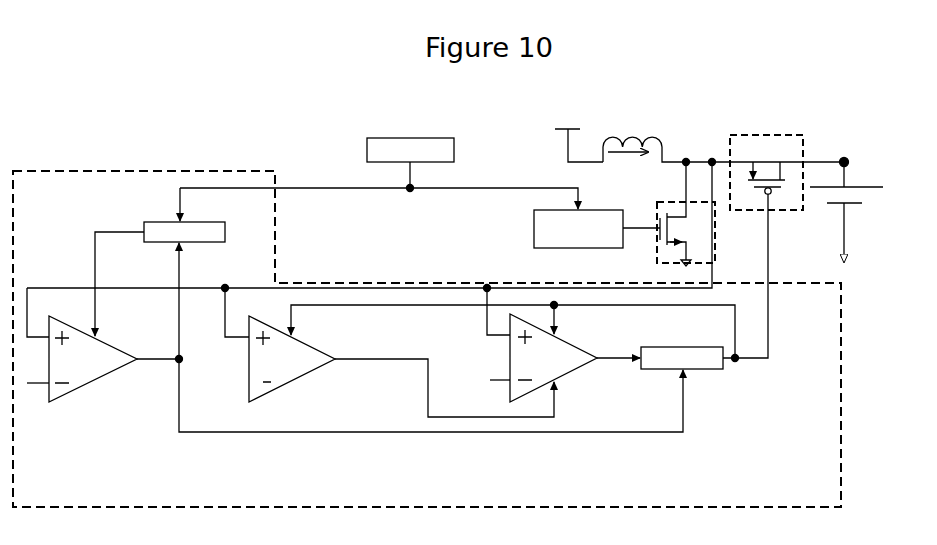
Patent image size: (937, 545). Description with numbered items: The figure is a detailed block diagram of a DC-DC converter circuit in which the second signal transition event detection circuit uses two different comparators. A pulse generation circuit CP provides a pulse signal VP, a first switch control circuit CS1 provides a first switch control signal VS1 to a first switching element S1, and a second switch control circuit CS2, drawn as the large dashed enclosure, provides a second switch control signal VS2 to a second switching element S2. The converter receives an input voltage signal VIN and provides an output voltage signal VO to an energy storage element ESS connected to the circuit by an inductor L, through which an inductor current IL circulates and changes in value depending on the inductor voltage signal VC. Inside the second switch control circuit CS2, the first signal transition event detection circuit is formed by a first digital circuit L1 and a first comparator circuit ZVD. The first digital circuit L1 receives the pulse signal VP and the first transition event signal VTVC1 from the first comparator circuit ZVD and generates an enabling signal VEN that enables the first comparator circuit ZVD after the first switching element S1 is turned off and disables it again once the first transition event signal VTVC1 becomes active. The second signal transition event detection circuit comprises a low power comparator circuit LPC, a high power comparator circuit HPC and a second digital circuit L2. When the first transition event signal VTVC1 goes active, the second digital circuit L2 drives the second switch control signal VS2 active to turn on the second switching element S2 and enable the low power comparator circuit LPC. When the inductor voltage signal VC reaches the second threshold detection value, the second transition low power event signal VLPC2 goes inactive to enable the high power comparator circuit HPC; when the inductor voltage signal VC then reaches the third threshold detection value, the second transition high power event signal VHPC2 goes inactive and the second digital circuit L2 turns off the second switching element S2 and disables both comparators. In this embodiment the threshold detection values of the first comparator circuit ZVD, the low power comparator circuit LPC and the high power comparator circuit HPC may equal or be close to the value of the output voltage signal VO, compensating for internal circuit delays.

The second switch control circuit CS2 is at (68, 170).
The enabling signal VEN is at (111, 271).
The first digital circuit L1 is at (184, 232).
The pulse generation circuit CP is at (410, 163).
The pulse signal VP is at (379, 195).
The input voltage signal VIN is at (578, 136).
The inductor L is at (723, 138).
The inductor current IL is at (628, 164).
The inductor voltage signal VC is at (703, 150).
The second switching element S2 is at (766, 172).
The output voltage signal VO is at (452, 260).
The first switch control circuit CS1 is at (578, 229).
The first switch control signal VS1 is at (649, 226).
The first switching element S1 is at (686, 213).
The second switch control signal VS2 is at (546, 278).
The energy storage element ESS is at (864, 232).
The first comparator circuit ZVD is at (82, 345).
The low power comparator circuit LPC is at (280, 345).
The high power comparator circuit HPC is at (542, 345).
The second digital circuit L2 is at (682, 358).
The first transition event signal VTVC1 is at (171, 379).
The second transition low power event signal VLPC2 is at (384, 366).
The second transition high power event signal VHPC2 is at (612, 364).